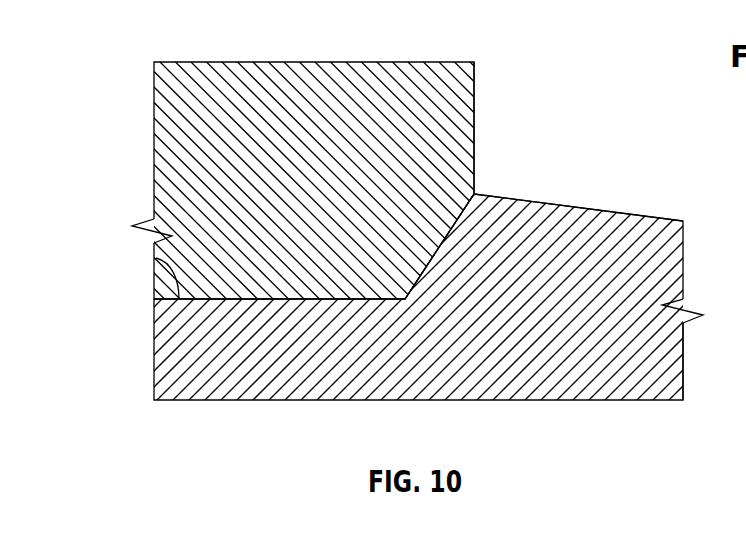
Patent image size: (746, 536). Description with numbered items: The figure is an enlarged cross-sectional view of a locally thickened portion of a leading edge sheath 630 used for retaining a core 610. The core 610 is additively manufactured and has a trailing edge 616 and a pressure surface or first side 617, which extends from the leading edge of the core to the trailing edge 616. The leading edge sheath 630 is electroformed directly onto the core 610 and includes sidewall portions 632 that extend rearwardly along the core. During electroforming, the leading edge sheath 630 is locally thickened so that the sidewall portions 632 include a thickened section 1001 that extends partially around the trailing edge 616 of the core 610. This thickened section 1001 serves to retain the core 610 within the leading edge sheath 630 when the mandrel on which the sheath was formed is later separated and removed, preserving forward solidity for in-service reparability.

The core 610 is at (203, 133).
The trailing edge 616 is at (475, 130).
The first side 617 is at (156, 258).
The leading edge sheath 630 is at (193, 373).
The sidewall portions 632 is at (598, 315).
The thickened section 1001 is at (518, 194).